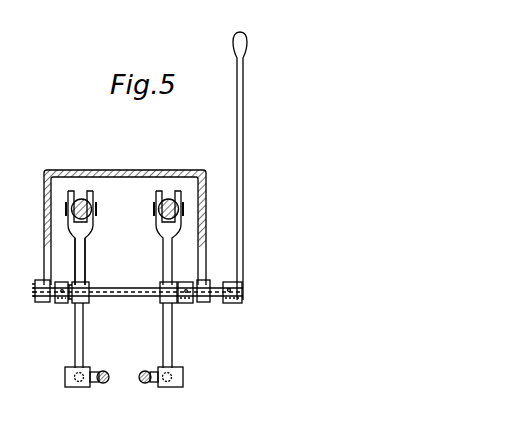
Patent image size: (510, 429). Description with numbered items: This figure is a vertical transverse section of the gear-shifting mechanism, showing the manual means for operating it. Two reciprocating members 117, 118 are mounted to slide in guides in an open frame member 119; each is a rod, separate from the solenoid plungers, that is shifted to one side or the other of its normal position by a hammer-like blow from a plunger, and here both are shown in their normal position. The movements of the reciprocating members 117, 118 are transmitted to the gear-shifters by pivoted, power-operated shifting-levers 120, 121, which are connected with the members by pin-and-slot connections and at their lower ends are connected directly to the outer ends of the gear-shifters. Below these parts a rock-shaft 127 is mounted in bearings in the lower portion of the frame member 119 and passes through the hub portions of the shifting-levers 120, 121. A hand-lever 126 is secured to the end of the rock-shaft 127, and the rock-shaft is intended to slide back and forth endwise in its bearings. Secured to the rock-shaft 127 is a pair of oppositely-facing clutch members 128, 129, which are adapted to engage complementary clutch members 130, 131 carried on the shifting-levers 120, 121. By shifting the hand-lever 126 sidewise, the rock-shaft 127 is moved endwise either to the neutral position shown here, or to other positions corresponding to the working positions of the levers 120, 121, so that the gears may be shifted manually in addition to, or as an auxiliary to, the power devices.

The reciprocating member 117 is at (80, 202).
The reciprocating member 118 is at (170, 202).
The open frame member 119 is at (138, 167).
The shifting-lever 120 is at (83, 352).
The shifting-lever 121 is at (173, 362).
The hand-lever 126 is at (248, 152).
The rock-shaft 127 is at (130, 294).
The clutch member 128 is at (58, 303).
The clutch member 129 is at (192, 307).
The complementary clutch member 130 is at (73, 304).
The complementary clutch member 131 is at (178, 304).